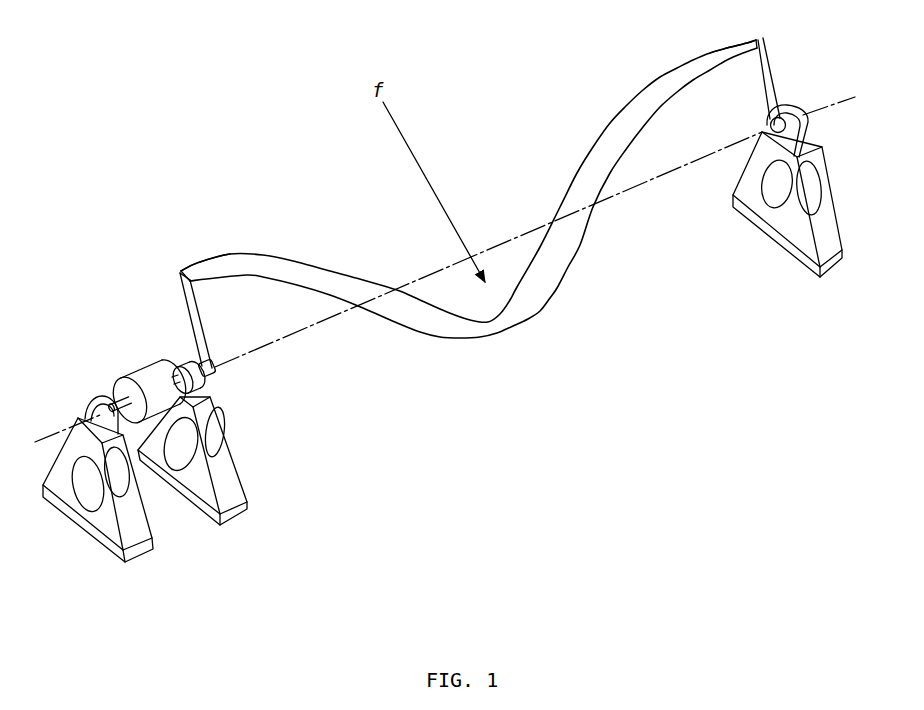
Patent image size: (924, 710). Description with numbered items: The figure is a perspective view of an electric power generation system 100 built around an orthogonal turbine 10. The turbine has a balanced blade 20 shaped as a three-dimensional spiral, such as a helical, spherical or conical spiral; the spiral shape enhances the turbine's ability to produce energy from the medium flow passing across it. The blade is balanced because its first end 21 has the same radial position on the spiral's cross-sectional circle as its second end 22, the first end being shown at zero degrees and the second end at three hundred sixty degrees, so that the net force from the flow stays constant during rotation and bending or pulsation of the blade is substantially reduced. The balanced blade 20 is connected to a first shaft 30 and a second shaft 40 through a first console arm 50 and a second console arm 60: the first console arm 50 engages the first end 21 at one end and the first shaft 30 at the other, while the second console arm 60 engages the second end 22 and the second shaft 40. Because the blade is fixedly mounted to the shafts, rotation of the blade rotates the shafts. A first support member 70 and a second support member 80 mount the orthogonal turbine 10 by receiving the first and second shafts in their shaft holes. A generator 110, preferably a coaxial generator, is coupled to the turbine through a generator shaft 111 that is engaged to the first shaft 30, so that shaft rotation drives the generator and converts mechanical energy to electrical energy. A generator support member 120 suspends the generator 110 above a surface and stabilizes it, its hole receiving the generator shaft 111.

The orthogonal turbine 10 is at (627, 343).
The balanced blade 20 is at (477, 325).
The first end of the balanced blade 21 is at (200, 270).
The second end of the balanced blade 22 is at (757, 37).
The first shaft 30 is at (210, 370).
The second shaft 40 is at (803, 117).
The first console arm 50 is at (193, 320).
The second console arm 60 is at (772, 83).
The first support member 70 is at (225, 468).
The second support member 80 is at (772, 225).
The electric power generation system 100 is at (197, 193).
The generator 110 is at (153, 370).
The generator shaft 111 is at (112, 395).
The generator support member 120 is at (93, 460).